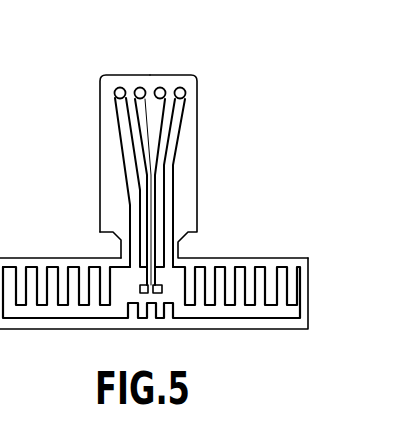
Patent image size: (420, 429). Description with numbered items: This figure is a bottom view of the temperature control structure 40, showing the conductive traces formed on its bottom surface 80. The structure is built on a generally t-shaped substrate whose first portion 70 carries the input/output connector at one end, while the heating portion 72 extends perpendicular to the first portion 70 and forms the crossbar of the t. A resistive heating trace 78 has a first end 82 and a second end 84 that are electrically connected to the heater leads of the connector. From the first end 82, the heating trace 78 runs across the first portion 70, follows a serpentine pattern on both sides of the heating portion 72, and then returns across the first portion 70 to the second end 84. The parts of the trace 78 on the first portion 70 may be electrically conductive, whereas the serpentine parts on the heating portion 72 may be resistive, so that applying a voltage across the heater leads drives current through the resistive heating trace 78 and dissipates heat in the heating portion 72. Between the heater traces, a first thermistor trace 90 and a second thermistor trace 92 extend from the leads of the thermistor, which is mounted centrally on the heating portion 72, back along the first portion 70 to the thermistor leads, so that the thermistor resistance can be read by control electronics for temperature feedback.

The temperature control structure 40 is at (312, 168).
The first portion 70 is at (100, 176).
The heating portion 72 is at (309, 283).
The resistive heating trace 78 is at (173, 174).
The bottom surface 80 is at (190, 115).
The first end 82 is at (190, 113).
The second end 84 is at (116, 98).
The first thermistor trace 90 is at (133, 91).
The second thermistor trace 92 is at (173, 92).